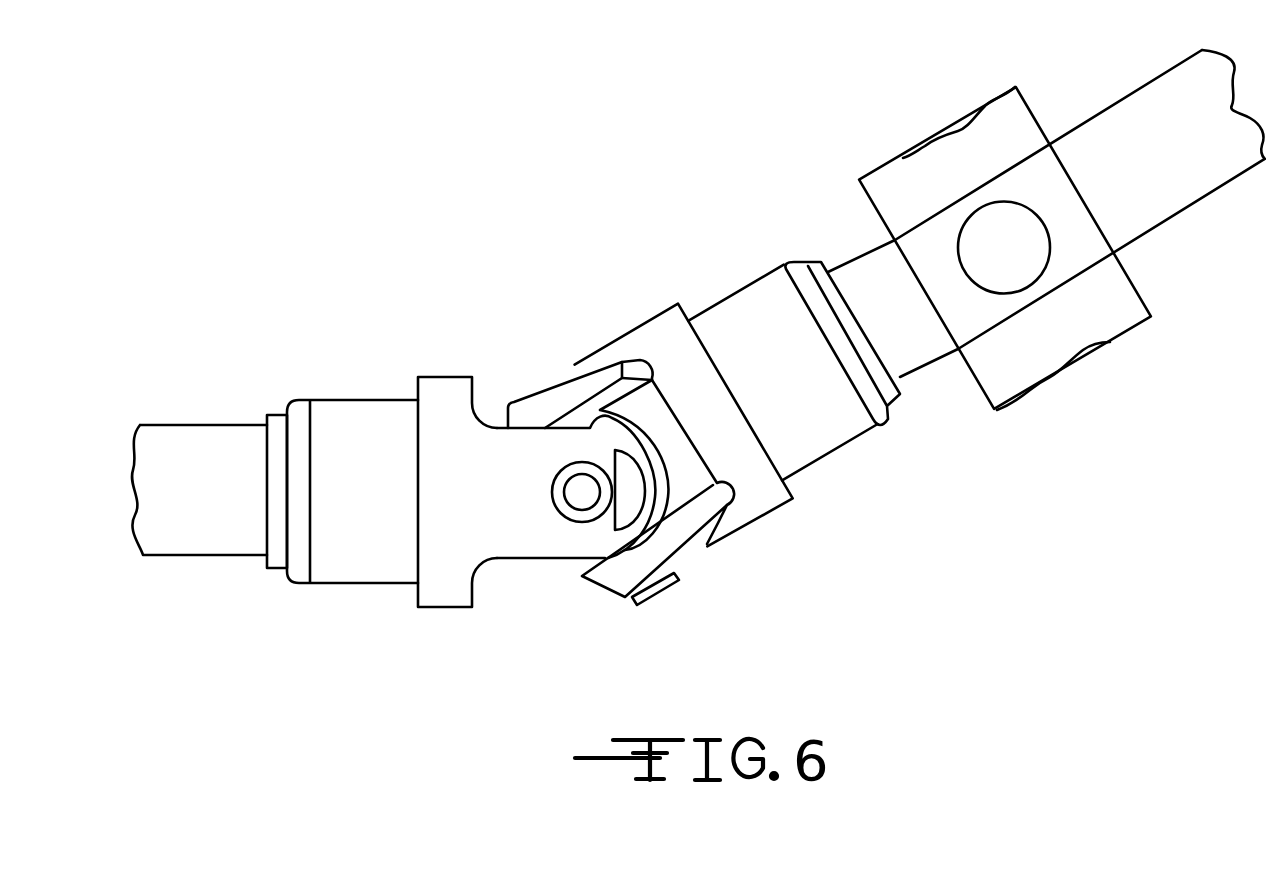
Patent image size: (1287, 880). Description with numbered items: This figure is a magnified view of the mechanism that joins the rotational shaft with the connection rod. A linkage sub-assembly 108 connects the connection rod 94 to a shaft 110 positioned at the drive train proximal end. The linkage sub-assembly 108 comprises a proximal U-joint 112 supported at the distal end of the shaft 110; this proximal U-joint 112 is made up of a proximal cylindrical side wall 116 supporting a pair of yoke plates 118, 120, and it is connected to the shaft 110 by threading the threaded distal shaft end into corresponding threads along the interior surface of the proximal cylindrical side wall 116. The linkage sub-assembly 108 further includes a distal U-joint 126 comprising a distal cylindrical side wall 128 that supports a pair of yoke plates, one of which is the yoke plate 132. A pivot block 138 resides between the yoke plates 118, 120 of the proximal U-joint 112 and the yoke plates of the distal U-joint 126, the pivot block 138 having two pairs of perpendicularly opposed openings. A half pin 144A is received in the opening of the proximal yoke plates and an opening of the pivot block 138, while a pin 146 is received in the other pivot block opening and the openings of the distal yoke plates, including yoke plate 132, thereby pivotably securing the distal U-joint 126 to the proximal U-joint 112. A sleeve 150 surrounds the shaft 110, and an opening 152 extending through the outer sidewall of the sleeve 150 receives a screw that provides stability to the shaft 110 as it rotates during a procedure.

The connection rod 94 is at (189, 455).
The distal cylindrical side wall 128 is at (370, 432).
The distal U-joint 126 is at (445, 587).
The yoke plate 132 is at (497, 537).
The pin 146 is at (580, 508).
The pivot block 138 is at (592, 421).
The yoke plate 120 is at (581, 372).
The linkage sub-assembly 108 is at (552, 236).
The pin 144A is at (668, 590).
The yoke plate 118 is at (709, 545).
The proximal U-joint 112 is at (800, 438).
The proximal cylindrical side wall 116 is at (749, 313).
The shaft 110 is at (1172, 173).
The sleeve 150 is at (993, 123).
The opening 152 is at (1018, 257).